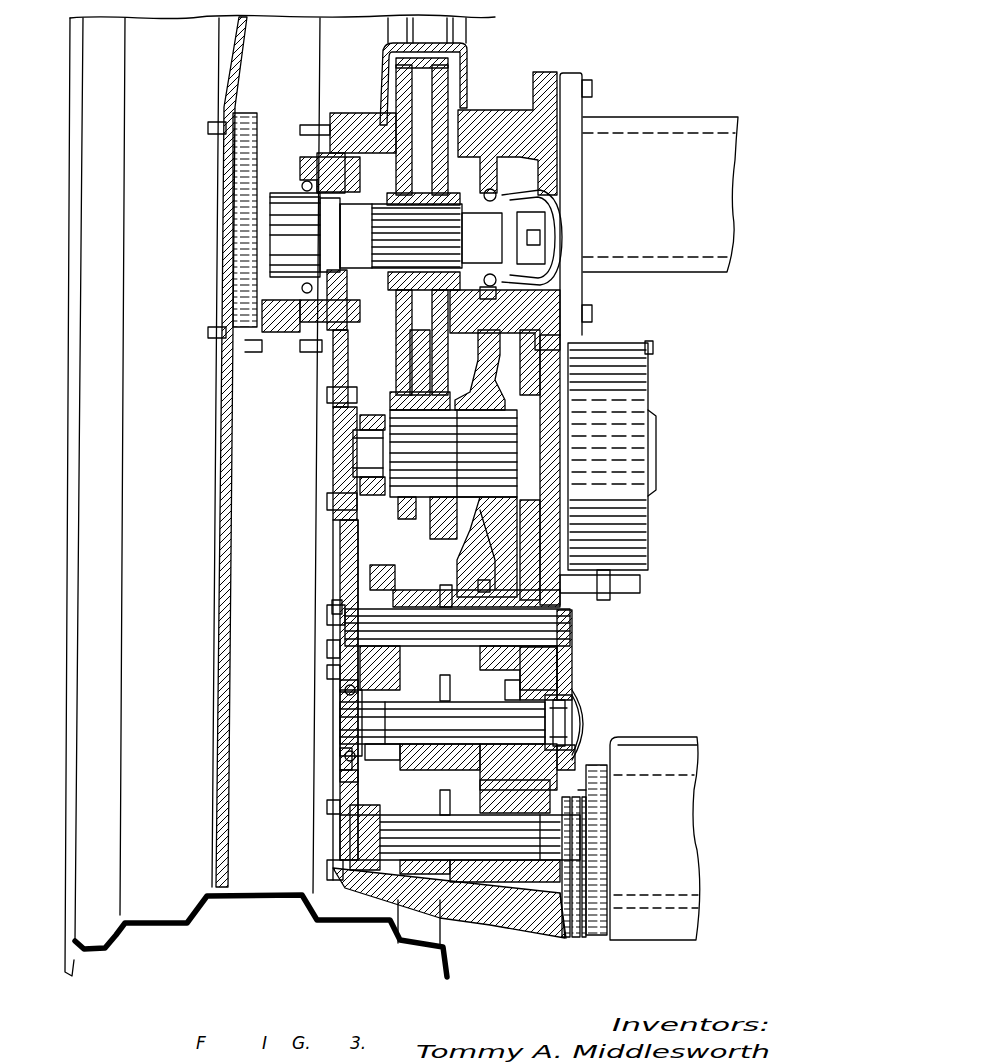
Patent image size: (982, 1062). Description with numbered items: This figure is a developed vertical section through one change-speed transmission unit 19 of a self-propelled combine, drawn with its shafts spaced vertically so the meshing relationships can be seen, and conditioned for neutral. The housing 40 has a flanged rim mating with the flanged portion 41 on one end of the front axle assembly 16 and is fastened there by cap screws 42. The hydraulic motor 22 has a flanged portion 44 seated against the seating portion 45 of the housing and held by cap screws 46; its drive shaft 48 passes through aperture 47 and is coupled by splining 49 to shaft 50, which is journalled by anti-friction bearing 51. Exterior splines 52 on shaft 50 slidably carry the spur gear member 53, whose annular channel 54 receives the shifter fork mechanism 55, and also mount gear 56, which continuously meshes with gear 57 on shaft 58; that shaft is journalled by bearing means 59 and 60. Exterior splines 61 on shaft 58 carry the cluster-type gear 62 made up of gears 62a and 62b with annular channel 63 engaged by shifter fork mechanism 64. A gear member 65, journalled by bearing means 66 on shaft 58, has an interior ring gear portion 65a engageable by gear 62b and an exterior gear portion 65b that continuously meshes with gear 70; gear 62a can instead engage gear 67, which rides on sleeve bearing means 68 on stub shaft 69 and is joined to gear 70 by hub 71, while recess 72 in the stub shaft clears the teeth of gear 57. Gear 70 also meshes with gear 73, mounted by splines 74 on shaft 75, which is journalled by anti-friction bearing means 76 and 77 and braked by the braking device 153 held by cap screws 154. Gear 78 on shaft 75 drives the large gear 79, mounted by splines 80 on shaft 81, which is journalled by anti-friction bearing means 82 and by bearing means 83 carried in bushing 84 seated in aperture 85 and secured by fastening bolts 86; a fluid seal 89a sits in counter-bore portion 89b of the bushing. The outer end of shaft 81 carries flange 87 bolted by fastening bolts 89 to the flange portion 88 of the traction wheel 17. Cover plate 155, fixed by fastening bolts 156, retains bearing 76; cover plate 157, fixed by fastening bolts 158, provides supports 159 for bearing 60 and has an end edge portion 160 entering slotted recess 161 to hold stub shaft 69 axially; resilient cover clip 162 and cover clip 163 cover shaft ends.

The front axle assembly 16 is at (699, 115).
The traction wheel 17 is at (85, 522).
The change-speed transmission unit assembly 19 is at (638, 626).
The hydraulic motor 22 is at (660, 740).
The housing 40 is at (538, 75).
The flanged portion 41 is at (580, 74).
The cap screws 42 is at (592, 88).
The flanged portion 44 is at (580, 938).
The seating portion 45 is at (570, 937).
The cap screws 46 is at (582, 762).
The aperture 47 is at (528, 925).
The drive shaft 48 is at (582, 815).
The splining 49 is at (548, 848).
The shaft 50 is at (406, 852).
The anti-friction bearing 51 is at (348, 838).
The exterior splines 52 is at (495, 862).
The spur gear member 53 is at (478, 920).
The annular channel 54 is at (435, 862).
The shifter fork mechanism 55 is at (438, 800).
The gear 56 is at (563, 870).
The gear 57 is at (543, 668).
The shaft 58 is at (578, 707).
The bearing means 59 is at (573, 697).
The bearing means 60 is at (340, 756).
The exterior splines 61 is at (386, 740).
The cluster-type gear 62 is at (340, 716).
The gear 62a is at (450, 762).
The gear 62b is at (458, 690).
The annular channel 63 is at (428, 780).
The shifter fork mechanism 64 is at (440, 690).
The gear member 65 is at (492, 790).
The interior ring gear portion 65a is at (480, 766).
The exterior gear portion 65b is at (490, 660).
The bearing means 66 is at (518, 690).
The gear 67 is at (396, 588).
The sleeve bearing means 68 is at (470, 604).
The stub shaft 69 is at (338, 610).
The gear 70 is at (479, 594).
The hub 71 is at (441, 588).
The recess 72 is at (542, 640).
The gear 73 is at (496, 556).
The splines 74 is at (447, 498).
The shaft 75 is at (340, 462).
The anti-friction bearing means 76 is at (385, 500).
The anti-friction bearing means 77 is at (500, 522).
The gear 78 is at (410, 497).
The gear 79 is at (445, 410).
The splines 80 is at (394, 290).
The shaft 81 is at (356, 205).
The anti-friction bearing means 82 is at (472, 300).
The anti-friction bearing means 83 is at (386, 256).
The bushing 84 is at (305, 160).
The aperture 85 is at (300, 323).
The fastening bolts 86 is at (303, 353).
The flange 87 is at (250, 353).
The flange portion 88 is at (225, 415).
The fastening bolts 89 is at (215, 336).
The fluid seal 89a is at (300, 302).
The counter-bore portion 89b is at (295, 182).
The braking device 153 is at (670, 396).
The cap screws 154 is at (653, 350).
The cover plate 155 is at (352, 450).
The fastening bolts 156 is at (330, 505).
The cover plate 157 is at (338, 738).
The fastening bolts 158 is at (325, 673).
The supports 159 is at (335, 688).
The end edge portion 160 is at (335, 648).
The slotted recess 161 is at (330, 618).
The resilient cover clip 162 is at (575, 722).
The cover clip 163 is at (543, 205).